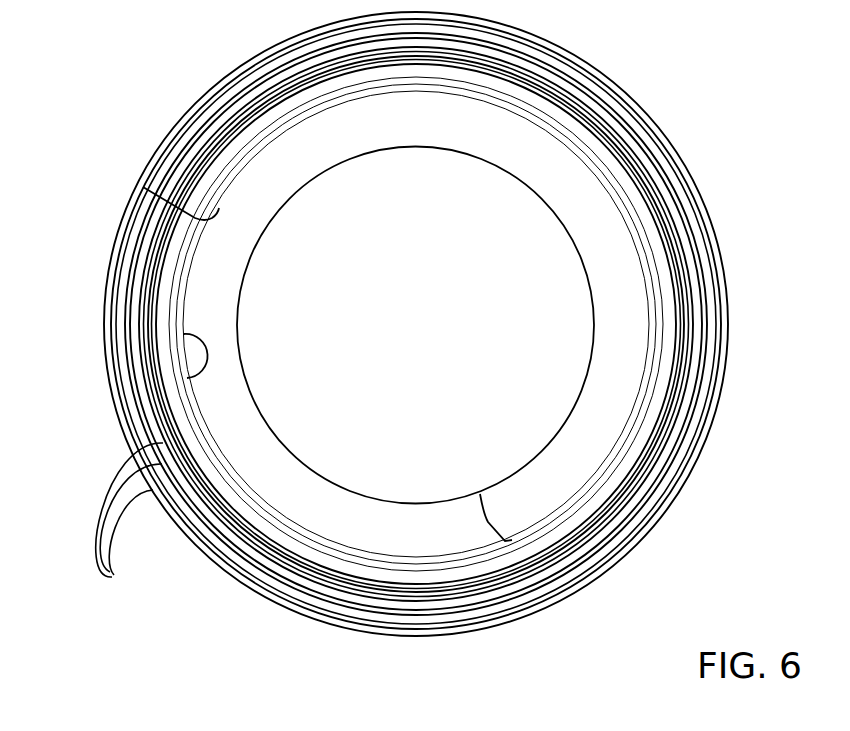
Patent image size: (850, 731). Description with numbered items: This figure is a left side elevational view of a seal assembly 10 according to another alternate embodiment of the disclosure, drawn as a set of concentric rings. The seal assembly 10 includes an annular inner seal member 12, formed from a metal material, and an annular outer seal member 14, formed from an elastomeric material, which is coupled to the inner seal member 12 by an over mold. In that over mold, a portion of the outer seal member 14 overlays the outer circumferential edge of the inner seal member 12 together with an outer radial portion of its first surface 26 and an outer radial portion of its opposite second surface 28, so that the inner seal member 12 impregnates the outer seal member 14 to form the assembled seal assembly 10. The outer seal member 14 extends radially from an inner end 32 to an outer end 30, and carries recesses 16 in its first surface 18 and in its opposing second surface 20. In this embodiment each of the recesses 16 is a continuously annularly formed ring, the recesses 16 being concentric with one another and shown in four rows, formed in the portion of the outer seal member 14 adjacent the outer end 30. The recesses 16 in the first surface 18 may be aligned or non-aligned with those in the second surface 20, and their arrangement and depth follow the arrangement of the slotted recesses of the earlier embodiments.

The seal assembly 10 is at (168, 42).
The inner seal member 12 is at (488, 522).
The outer seal member 14 is at (166, 202).
The recesses 16 is at (112, 577).
The first surface 18 is at (200, 527).
The second surface 20 is at (233, 577).
The first surface 26 is at (513, 497).
The second surface 28 is at (416, 148).
The outer end 30 is at (637, 545).
The inner end 32 is at (187, 378).